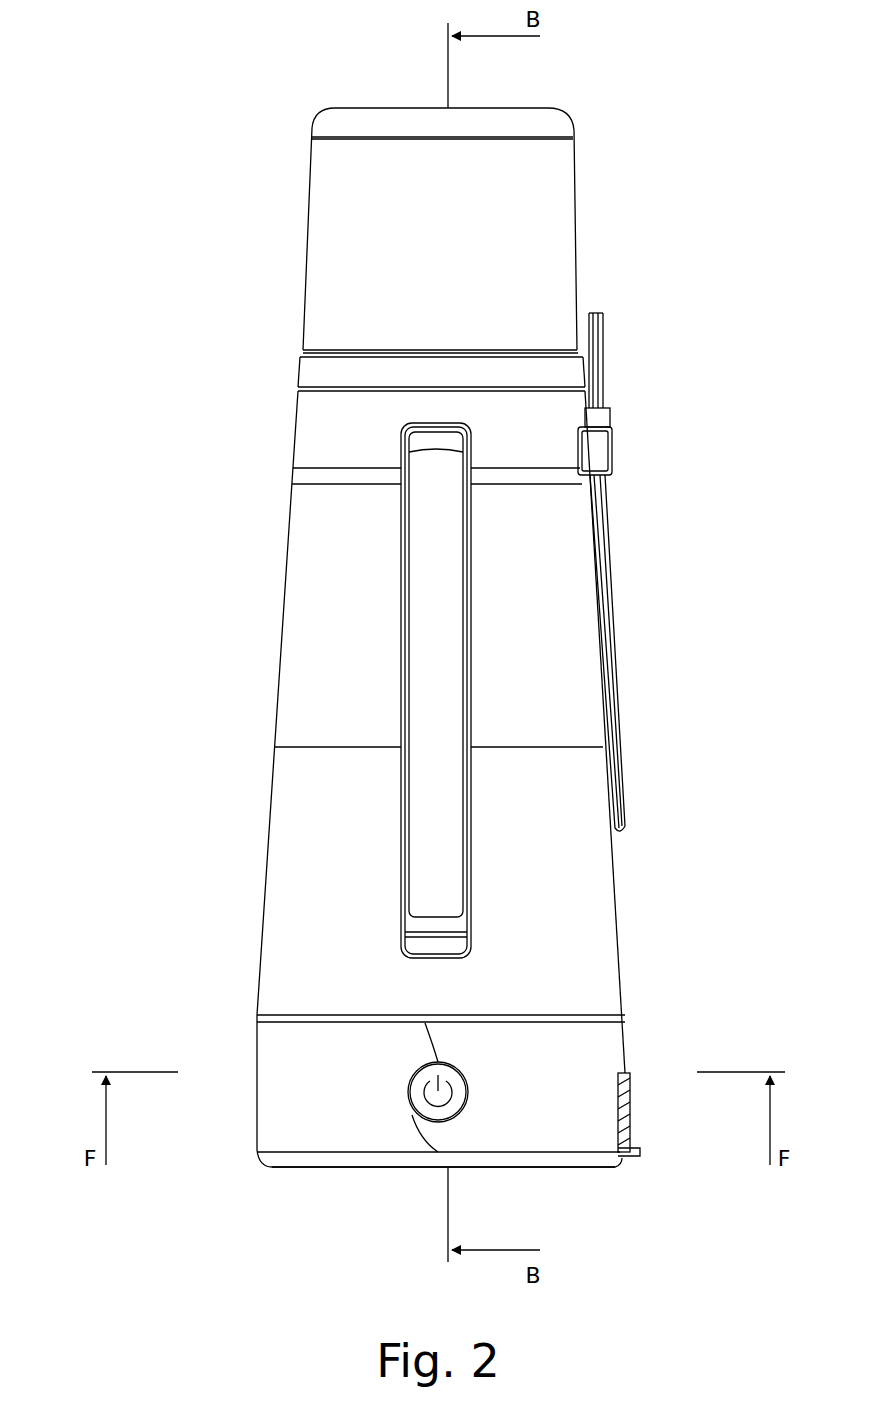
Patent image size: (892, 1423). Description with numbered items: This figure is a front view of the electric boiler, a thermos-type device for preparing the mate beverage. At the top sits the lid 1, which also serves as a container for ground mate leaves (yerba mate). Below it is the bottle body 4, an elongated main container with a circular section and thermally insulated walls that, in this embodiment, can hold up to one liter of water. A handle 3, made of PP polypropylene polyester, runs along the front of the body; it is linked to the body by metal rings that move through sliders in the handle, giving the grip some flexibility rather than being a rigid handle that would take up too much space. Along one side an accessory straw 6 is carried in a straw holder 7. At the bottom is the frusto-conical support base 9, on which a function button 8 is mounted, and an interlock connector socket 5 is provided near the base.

The top cap 1 is at (385, 268).
The handle 3 is at (430, 605).
The main body 4 is at (333, 893).
The hook 5 is at (622, 1110).
The tube 6 is at (601, 387).
The connector 7 is at (600, 462).
The power button 8 is at (410, 1097).
The base 9 is at (425, 1157).